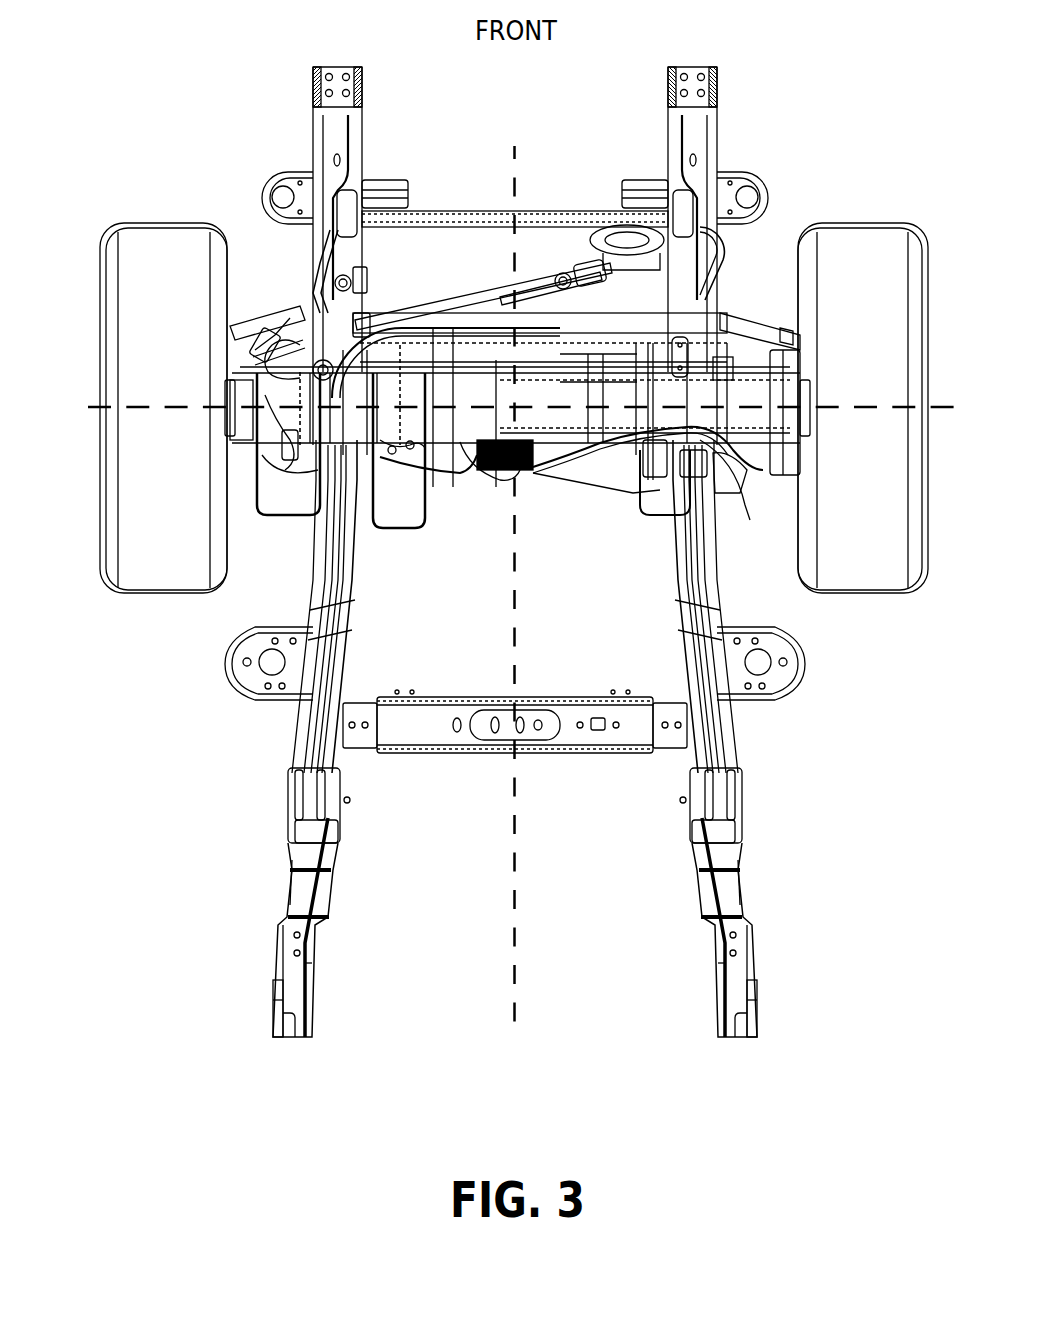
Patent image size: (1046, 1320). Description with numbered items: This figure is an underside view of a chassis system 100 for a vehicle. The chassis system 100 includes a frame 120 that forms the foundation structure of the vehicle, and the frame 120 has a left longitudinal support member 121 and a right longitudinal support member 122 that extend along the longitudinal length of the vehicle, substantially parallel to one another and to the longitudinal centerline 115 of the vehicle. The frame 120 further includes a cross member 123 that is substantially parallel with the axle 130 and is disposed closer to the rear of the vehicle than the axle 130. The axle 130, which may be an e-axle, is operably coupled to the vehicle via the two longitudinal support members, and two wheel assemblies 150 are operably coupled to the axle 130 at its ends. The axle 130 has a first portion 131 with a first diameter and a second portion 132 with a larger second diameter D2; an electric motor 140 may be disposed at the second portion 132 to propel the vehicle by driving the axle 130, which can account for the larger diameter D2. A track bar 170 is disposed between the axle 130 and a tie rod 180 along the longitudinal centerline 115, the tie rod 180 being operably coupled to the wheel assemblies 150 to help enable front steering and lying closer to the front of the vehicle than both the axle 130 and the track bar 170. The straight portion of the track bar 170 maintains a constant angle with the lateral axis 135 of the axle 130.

The chassis system 100 is at (491, 552).
The longitudinal centerline 115 is at (466, 585).
The frame 120 is at (515, 552).
The left longitudinal support member 121 is at (237, 932).
The right longitudinal support member 122 is at (801, 881).
The cross member 123 is at (519, 761).
The axle 130 is at (240, 275).
The first portion 131 is at (278, 469).
The second portion 132 is at (418, 475).
The lateral axis 135 is at (427, 451).
The electric motor 140 is at (515, 428).
The wheel assembly 150 is at (526, 468).
The track bar 170 is at (539, 257).
The tie rod 180 is at (526, 290).
The second diameter D2 is at (264, 338).